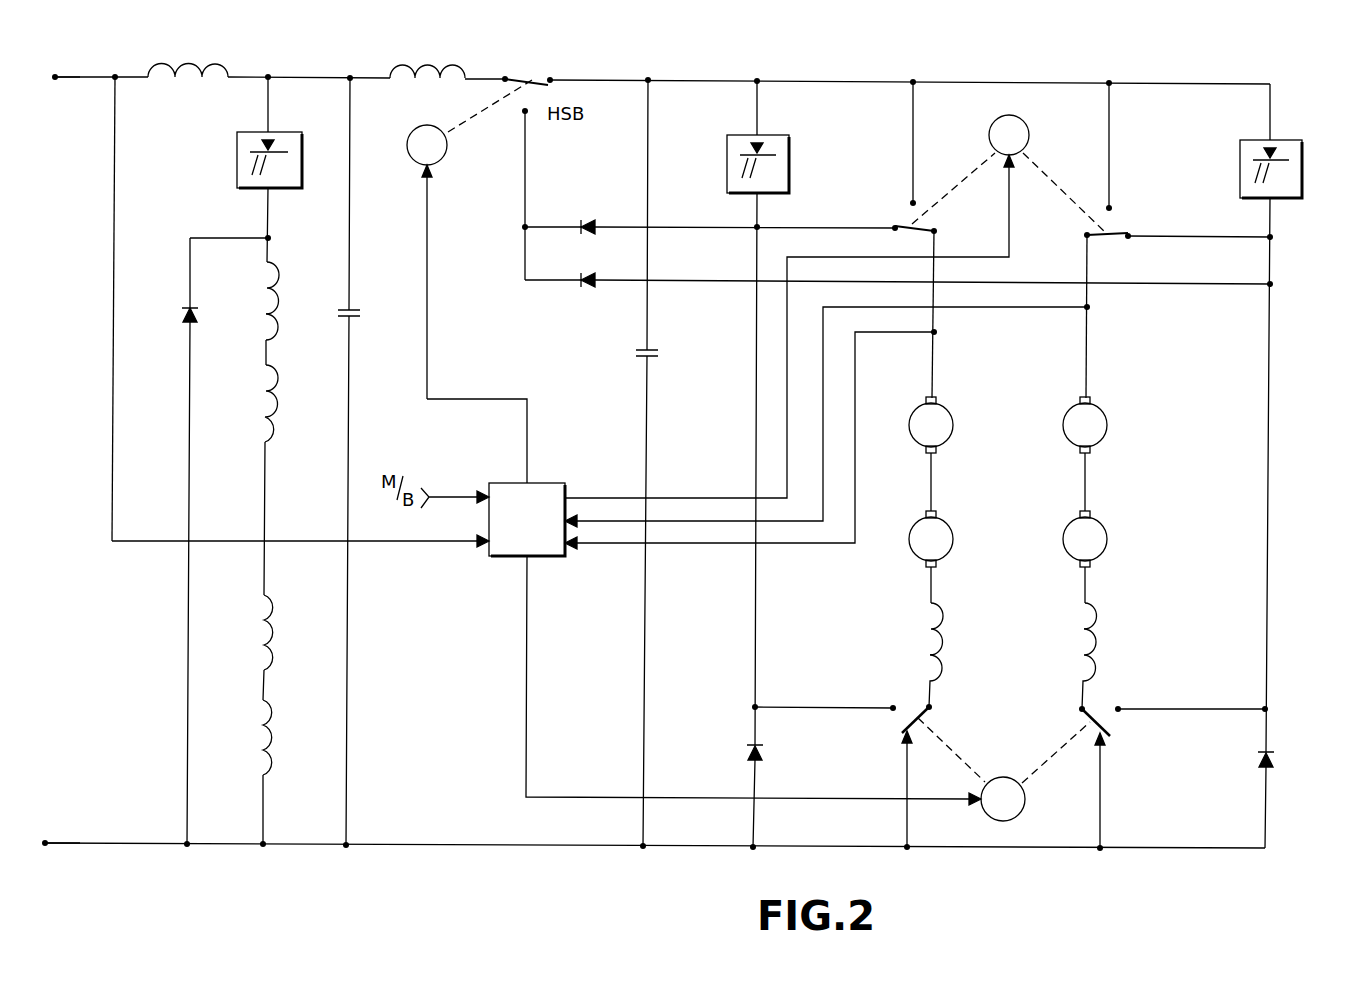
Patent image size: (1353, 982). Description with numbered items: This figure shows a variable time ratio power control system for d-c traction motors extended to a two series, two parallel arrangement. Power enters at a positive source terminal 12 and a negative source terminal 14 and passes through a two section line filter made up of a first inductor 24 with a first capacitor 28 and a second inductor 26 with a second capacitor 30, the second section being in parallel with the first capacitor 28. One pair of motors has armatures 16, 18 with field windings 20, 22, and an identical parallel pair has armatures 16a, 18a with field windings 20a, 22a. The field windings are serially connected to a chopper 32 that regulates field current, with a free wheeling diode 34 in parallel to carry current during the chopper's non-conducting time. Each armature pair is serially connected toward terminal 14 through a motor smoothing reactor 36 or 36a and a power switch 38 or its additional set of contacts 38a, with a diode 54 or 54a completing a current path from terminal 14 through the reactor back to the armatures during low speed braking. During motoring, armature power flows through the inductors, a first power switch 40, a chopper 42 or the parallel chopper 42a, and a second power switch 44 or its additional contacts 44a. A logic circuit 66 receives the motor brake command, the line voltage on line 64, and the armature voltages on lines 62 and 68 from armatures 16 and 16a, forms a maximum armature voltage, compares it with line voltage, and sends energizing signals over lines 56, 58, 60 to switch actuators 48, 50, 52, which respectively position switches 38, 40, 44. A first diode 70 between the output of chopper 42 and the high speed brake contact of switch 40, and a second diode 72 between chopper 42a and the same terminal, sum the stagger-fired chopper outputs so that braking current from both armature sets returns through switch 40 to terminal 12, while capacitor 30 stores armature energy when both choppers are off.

The first source terminal 12 is at (57, 77).
The second source terminal 14 is at (47, 850).
The armature 16 is at (951, 415).
The armature 16a is at (1107, 423).
The armature 18 is at (951, 532).
The armature 18a is at (1107, 535).
The field winding 20 is at (284, 296).
The field winding 20a is at (280, 630).
The field winding 22 is at (281, 398).
The field winding 22a is at (278, 737).
The first inductor 24 is at (200, 70).
The second inductor 26 is at (447, 68).
The first capacitor 28 is at (362, 318).
The second capacitor 30 is at (660, 358).
The chopper 32 is at (236, 166).
The free wheeling diode 34 is at (184, 319).
The motor smoothing reactor 36 is at (942, 645).
The motor smoothing reactor 36a is at (1096, 645).
The power switch 38 is at (916, 698).
The additional set of contacts 38a is at (1108, 702).
The first power switch 40 is at (545, 74).
The chopper 42 is at (790, 154).
The chopper circuit 42a is at (1312, 144).
The second power switch 44 is at (902, 217).
The additional set of contacts 44a is at (1130, 225).
The switch actuator 48 is at (1026, 803).
The switch actuator 50 is at (408, 136).
The switch actuator 52 is at (986, 128).
The diode 54 is at (738, 751).
The diode 54a is at (1292, 750).
The line 56 is at (525, 650).
The line 58 is at (427, 223).
The line 60 is at (697, 501).
The line 62 is at (627, 545).
The line 64 is at (108, 309).
The logic circuit 66 is at (565, 482).
The line 68 is at (688, 522).
The first diode 70 is at (590, 220).
The second diode 72 is at (590, 273).